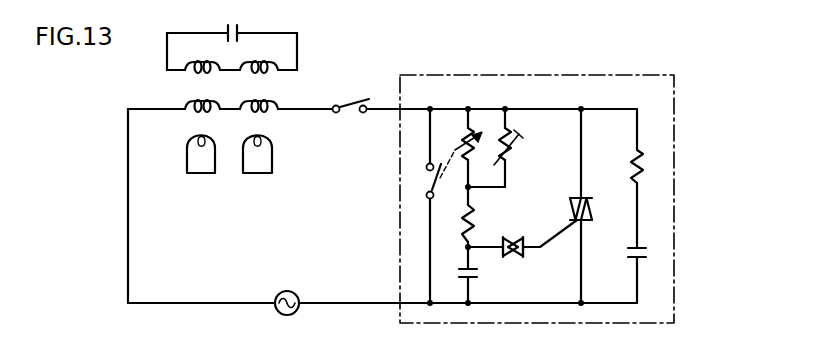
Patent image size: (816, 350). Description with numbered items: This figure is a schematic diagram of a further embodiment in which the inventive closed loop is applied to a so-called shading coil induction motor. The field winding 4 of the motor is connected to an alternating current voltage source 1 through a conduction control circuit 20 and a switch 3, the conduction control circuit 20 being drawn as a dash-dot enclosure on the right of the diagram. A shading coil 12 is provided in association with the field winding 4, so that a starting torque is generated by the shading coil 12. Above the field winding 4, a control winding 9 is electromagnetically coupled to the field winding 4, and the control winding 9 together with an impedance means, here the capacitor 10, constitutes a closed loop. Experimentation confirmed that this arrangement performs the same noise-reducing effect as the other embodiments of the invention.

The alternating current voltage source 1 is at (300, 291).
The switch 3 is at (345, 113).
The field winding 4 is at (268, 113).
The control winding 9 is at (246, 60).
The capacitor 10 is at (239, 23).
The shading coil 12 is at (249, 177).
The conduction control circuit 20 is at (398, 221).